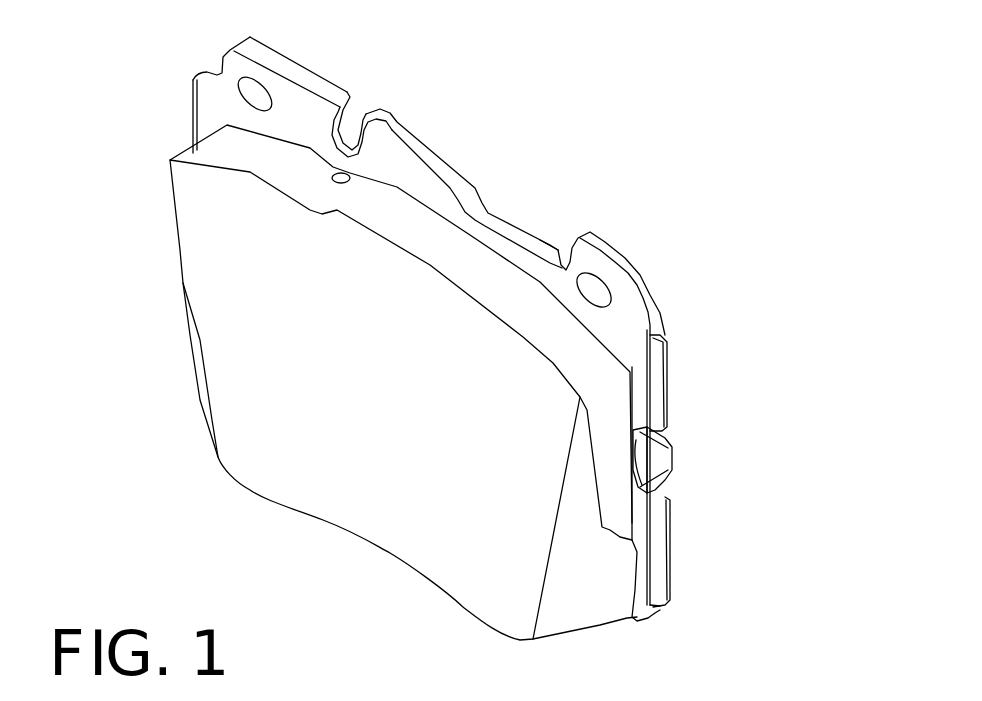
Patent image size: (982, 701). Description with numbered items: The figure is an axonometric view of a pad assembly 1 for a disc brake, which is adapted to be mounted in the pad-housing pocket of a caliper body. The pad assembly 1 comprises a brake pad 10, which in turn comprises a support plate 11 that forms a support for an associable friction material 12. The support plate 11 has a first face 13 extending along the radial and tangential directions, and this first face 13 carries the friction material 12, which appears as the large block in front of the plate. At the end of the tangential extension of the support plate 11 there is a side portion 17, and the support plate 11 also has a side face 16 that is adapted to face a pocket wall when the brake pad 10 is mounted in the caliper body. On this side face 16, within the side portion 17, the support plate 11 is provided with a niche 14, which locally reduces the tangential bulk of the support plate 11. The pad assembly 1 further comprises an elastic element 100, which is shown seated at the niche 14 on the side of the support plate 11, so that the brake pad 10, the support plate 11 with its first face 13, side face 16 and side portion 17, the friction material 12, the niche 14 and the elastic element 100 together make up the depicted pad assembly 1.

The pad assembly 1 is at (628, 167).
The brake pad 10 is at (232, 108).
The support plate 11 is at (313, 82).
The friction material 12 is at (245, 313).
The first face 13 is at (617, 333).
The niche 14 is at (670, 443).
The side face 16 is at (658, 557).
The side portion 17 is at (642, 380).
The elastic element 100 is at (672, 470).